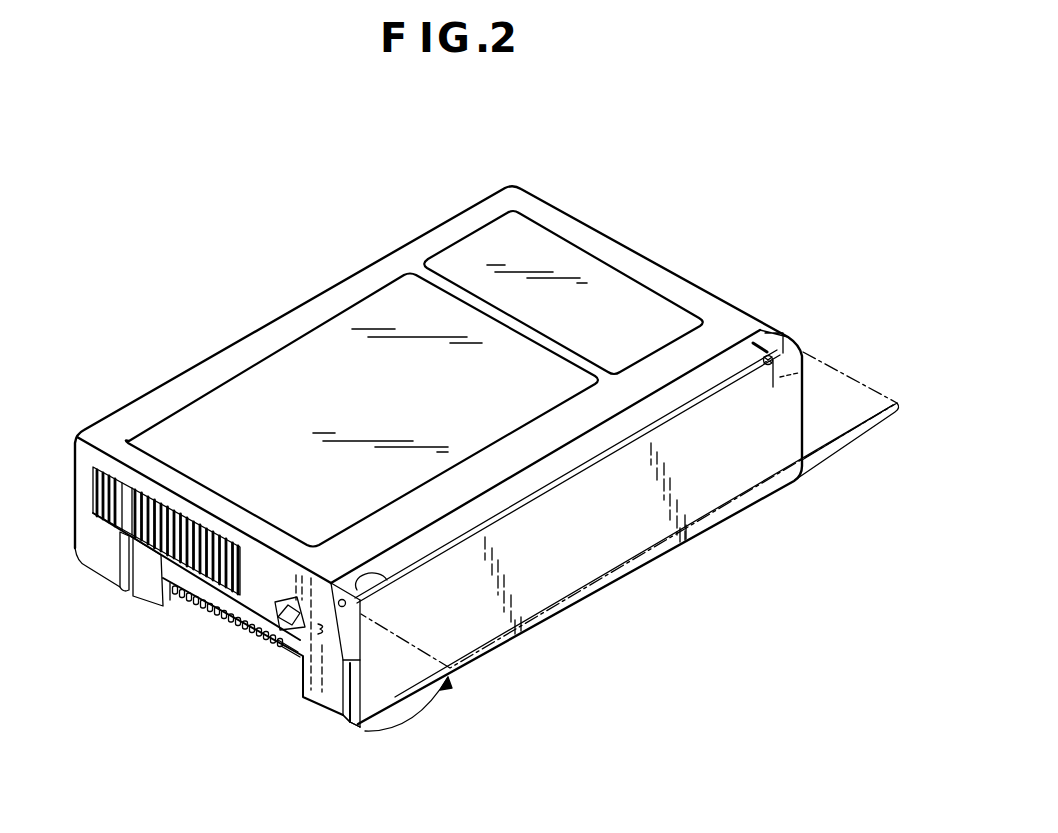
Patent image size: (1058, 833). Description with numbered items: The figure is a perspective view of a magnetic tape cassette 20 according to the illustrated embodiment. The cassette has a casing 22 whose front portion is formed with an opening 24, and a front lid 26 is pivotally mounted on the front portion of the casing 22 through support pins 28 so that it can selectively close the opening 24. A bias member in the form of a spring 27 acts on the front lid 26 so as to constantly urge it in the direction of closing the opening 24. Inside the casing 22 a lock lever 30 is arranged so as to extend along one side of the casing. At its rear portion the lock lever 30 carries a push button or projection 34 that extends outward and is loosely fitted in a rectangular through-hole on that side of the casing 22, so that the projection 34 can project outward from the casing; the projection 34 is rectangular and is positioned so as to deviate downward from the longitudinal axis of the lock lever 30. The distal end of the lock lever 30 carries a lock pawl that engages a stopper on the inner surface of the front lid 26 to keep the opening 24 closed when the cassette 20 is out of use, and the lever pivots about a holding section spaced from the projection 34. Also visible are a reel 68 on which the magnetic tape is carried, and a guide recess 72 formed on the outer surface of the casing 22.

The magnetic tape cassette 20 is at (603, 198).
The casing 22 is at (713, 303).
The opening 24 is at (348, 727).
The front lid 26 is at (627, 538).
The spring 27 is at (803, 363).
The support pins 28 is at (378, 576).
The lock lever 30 is at (323, 578).
The push button 34 is at (297, 647).
The reel 68 is at (207, 628).
The guide recess 72 is at (120, 561).